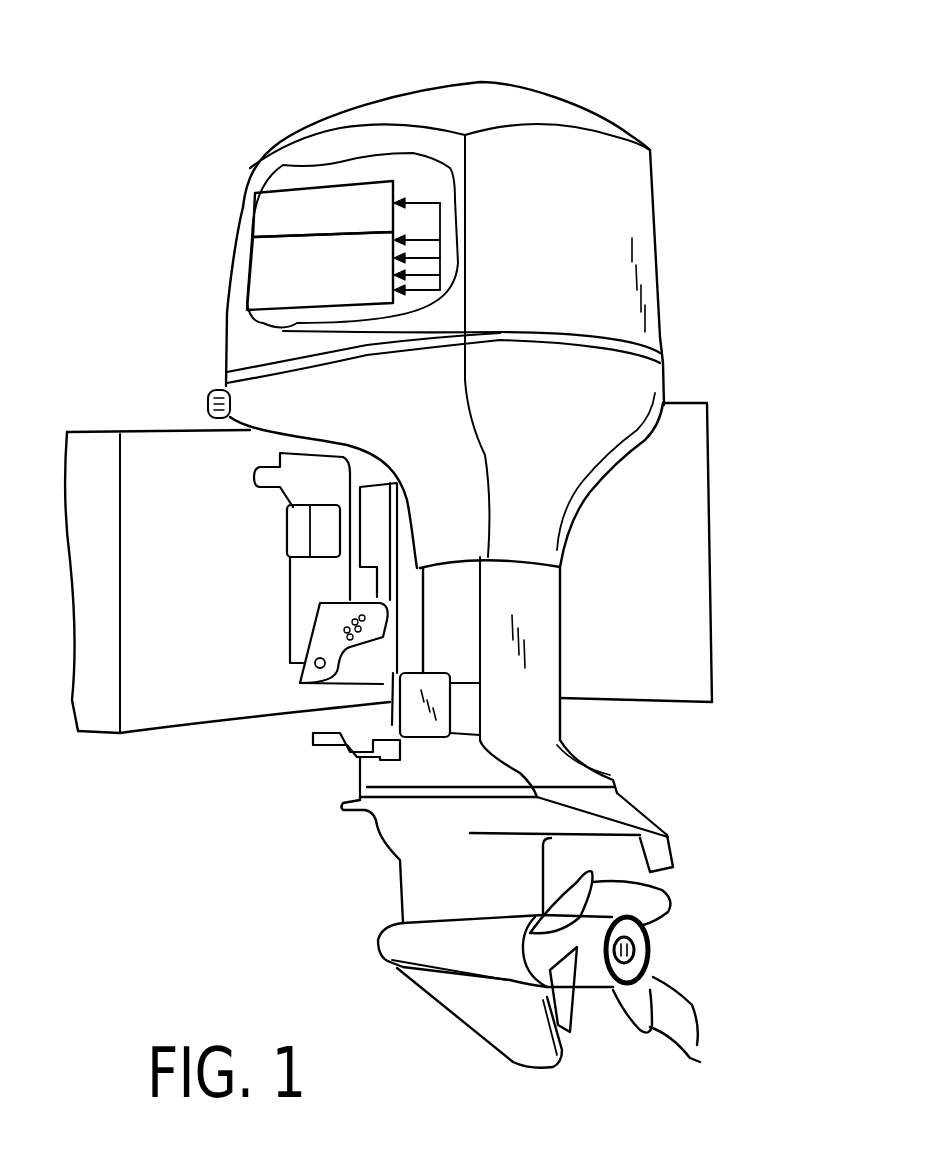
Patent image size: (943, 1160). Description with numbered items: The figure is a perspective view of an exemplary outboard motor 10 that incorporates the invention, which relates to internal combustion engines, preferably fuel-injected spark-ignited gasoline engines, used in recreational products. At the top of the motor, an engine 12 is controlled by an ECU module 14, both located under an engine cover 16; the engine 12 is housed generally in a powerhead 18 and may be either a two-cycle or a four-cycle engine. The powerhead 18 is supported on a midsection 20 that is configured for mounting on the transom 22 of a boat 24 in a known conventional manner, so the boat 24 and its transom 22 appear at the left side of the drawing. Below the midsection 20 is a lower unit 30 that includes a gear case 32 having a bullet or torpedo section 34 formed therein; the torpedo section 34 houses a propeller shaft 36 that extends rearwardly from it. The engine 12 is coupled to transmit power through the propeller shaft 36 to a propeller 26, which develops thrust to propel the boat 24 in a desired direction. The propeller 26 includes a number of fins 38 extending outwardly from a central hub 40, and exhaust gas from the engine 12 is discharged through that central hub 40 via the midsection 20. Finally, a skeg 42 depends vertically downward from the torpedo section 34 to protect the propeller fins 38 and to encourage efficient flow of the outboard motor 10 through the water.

The outboard motor 10 is at (188, 264).
The engine 12 is at (277, 338).
The ECU module 14 is at (287, 185).
The engine cover 16 is at (618, 160).
The powerhead 18 is at (669, 370).
The midsection 20 is at (562, 652).
The transom 22 is at (208, 700).
The boat 24 is at (156, 417).
The propeller 26 is at (675, 900).
The lower unit 30 is at (659, 799).
The gear case 32 is at (417, 873).
The torpedo section 34 is at (457, 962).
The propeller shaft 36 is at (635, 952).
The fins 38 is at (648, 1025).
The central hub 40 is at (648, 975).
The skeg 42 is at (497, 1033).